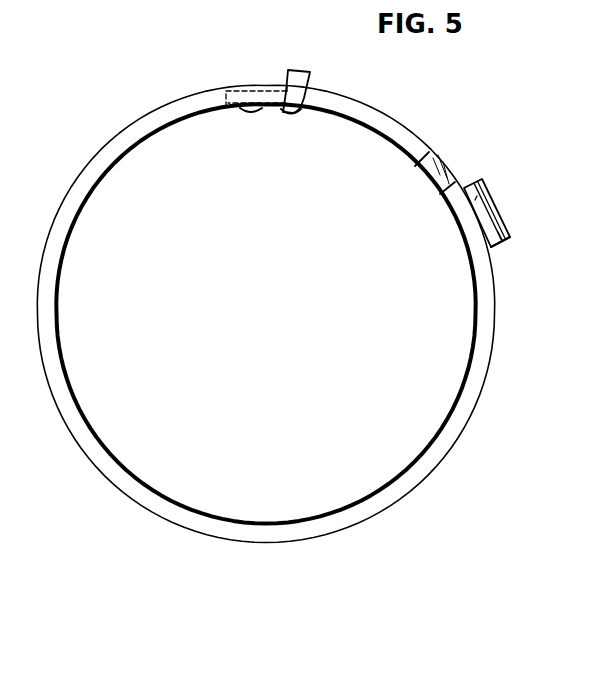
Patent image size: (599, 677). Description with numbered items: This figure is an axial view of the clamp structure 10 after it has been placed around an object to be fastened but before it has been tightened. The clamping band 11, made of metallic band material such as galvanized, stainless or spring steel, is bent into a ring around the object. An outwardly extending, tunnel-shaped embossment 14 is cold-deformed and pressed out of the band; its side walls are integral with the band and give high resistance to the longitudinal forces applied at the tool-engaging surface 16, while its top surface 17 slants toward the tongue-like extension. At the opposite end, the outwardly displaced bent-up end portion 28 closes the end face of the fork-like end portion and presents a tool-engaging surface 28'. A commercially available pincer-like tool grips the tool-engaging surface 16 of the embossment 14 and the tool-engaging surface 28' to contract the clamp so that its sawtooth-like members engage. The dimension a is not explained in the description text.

The clamp structure 10 is at (380, 106).
The clamping band 11 is at (130, 133).
The bent-up end portion 28 is at (270, 71).
The tool-engaging surface 28' is at (247, 66).
The slot width a is at (412, 174).
The embossment 14 is at (494, 202).
The tool-engaging surface 16 is at (503, 249).
The top surface 17 is at (497, 211).